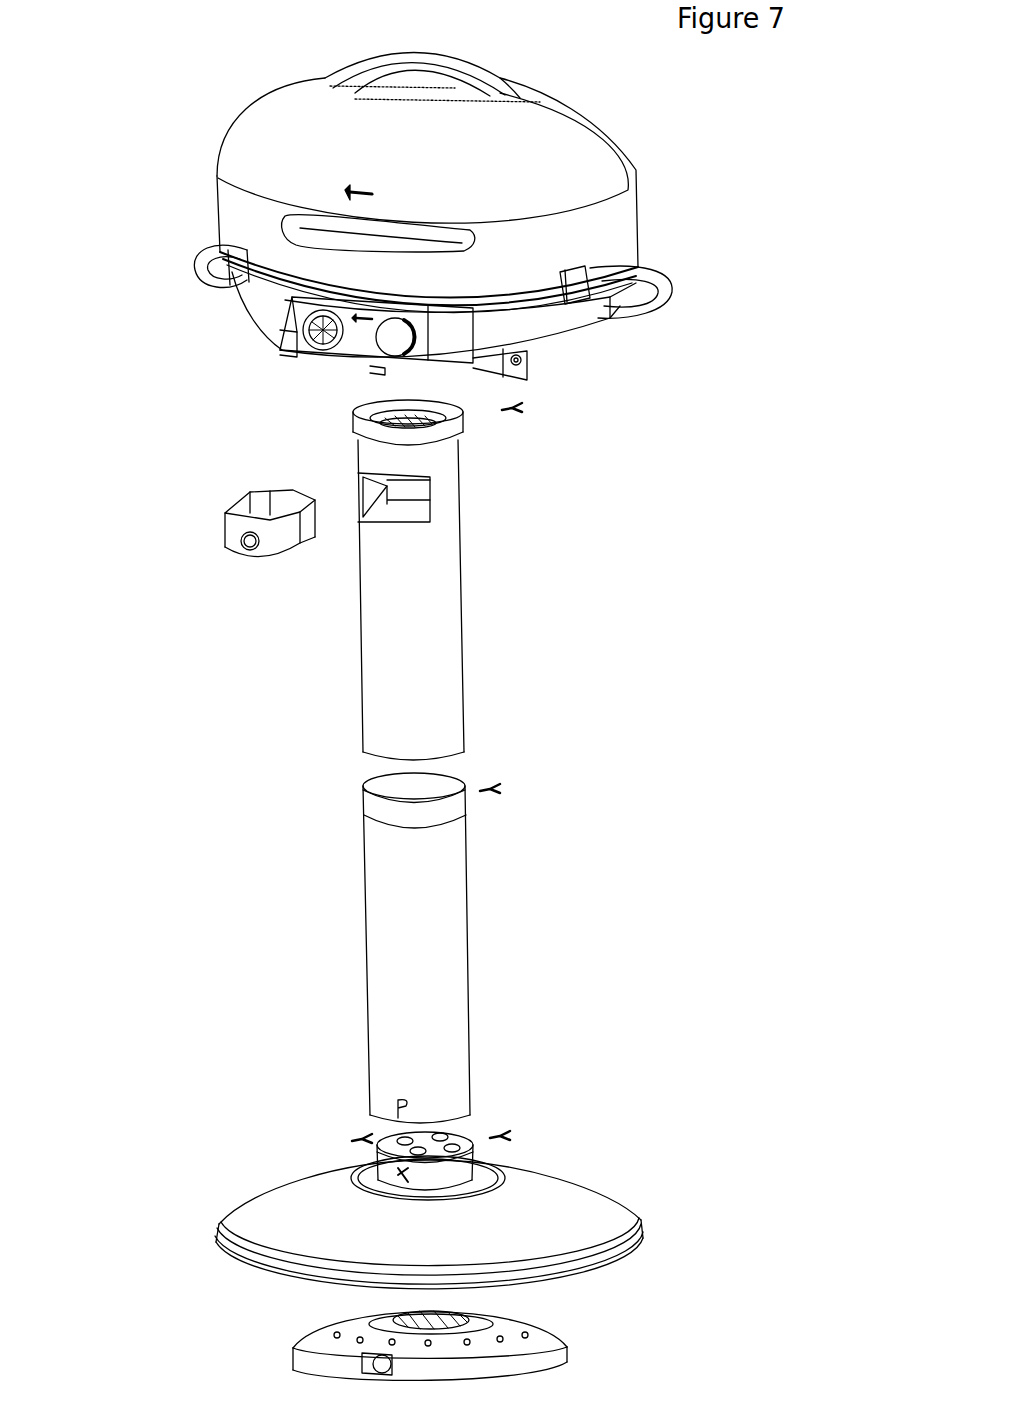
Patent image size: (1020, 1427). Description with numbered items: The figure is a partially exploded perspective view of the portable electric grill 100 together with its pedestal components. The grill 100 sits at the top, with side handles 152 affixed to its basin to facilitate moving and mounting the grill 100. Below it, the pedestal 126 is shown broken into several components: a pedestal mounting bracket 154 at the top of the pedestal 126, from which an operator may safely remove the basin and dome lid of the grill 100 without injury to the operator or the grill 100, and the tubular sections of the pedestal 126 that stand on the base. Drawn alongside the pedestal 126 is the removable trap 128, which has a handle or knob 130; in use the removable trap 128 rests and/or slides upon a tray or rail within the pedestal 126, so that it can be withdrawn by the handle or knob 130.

The portable electric grill 100 is at (164, 137).
The side handles 152 is at (210, 258).
The pedestal mounting bracket 154 is at (373, 432).
The pedestal 126 is at (462, 597).
The removable trap 128 is at (287, 544).
The handle or knob 130 is at (250, 543).